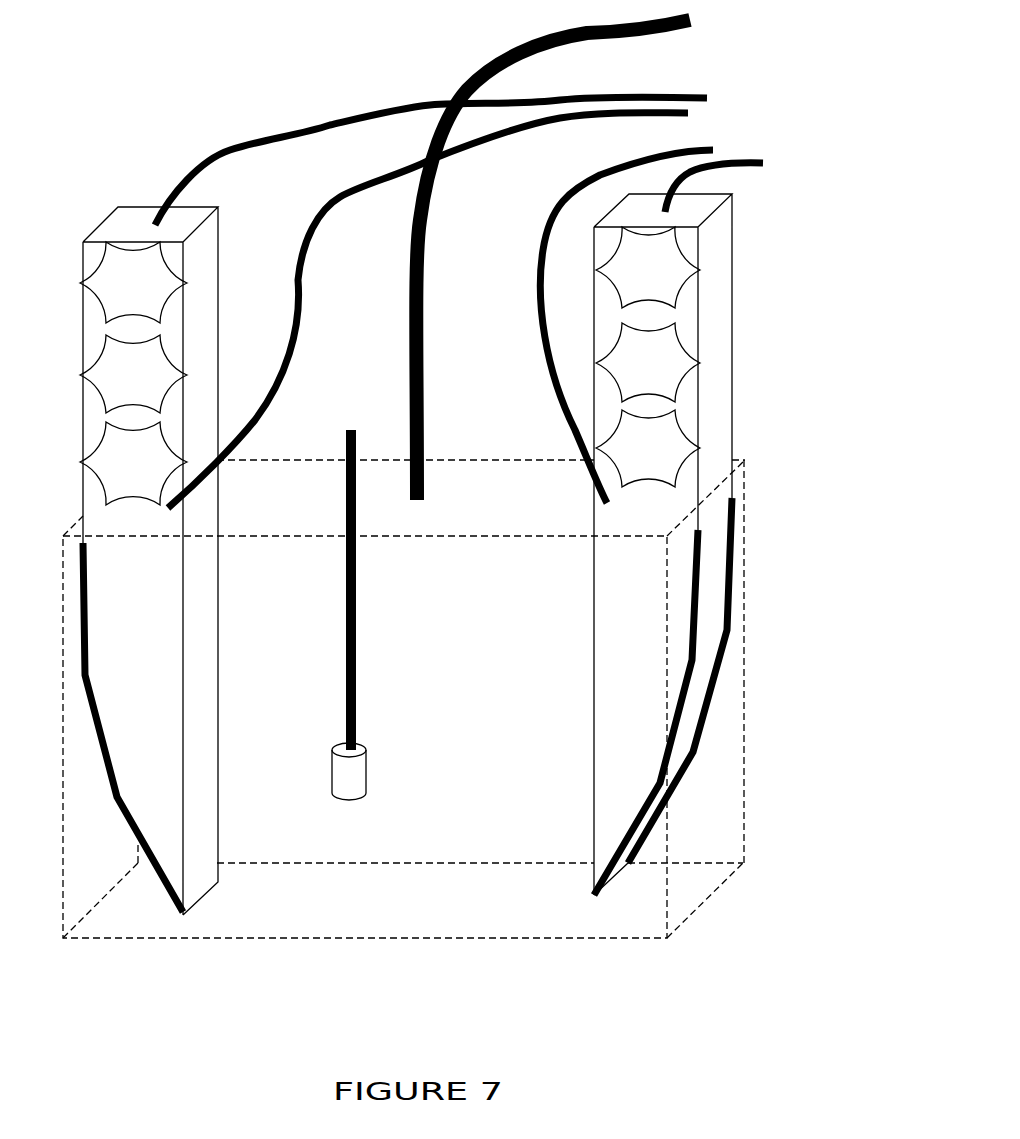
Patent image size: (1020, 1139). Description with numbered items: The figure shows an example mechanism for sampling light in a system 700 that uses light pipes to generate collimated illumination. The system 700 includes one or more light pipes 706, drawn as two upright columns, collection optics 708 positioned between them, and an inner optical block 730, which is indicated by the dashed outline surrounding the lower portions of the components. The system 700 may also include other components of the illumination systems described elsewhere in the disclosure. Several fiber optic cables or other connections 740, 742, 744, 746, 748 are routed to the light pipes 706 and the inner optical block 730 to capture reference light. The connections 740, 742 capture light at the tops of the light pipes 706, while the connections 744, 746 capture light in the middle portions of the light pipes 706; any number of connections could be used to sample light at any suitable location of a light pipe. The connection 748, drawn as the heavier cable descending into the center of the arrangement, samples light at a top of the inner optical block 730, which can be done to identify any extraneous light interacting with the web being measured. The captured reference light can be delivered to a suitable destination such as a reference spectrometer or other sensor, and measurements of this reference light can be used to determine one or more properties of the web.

The system 700 is at (118, 82).
The light pipe 706 is at (116, 226).
The collection optics 708 is at (358, 806).
The inner optical block 730 is at (532, 945).
The connection 740 is at (290, 128).
The connection 742 is at (737, 153).
The connection 744 is at (312, 228).
The connection 746 is at (555, 200).
The connection 748 is at (537, 38).